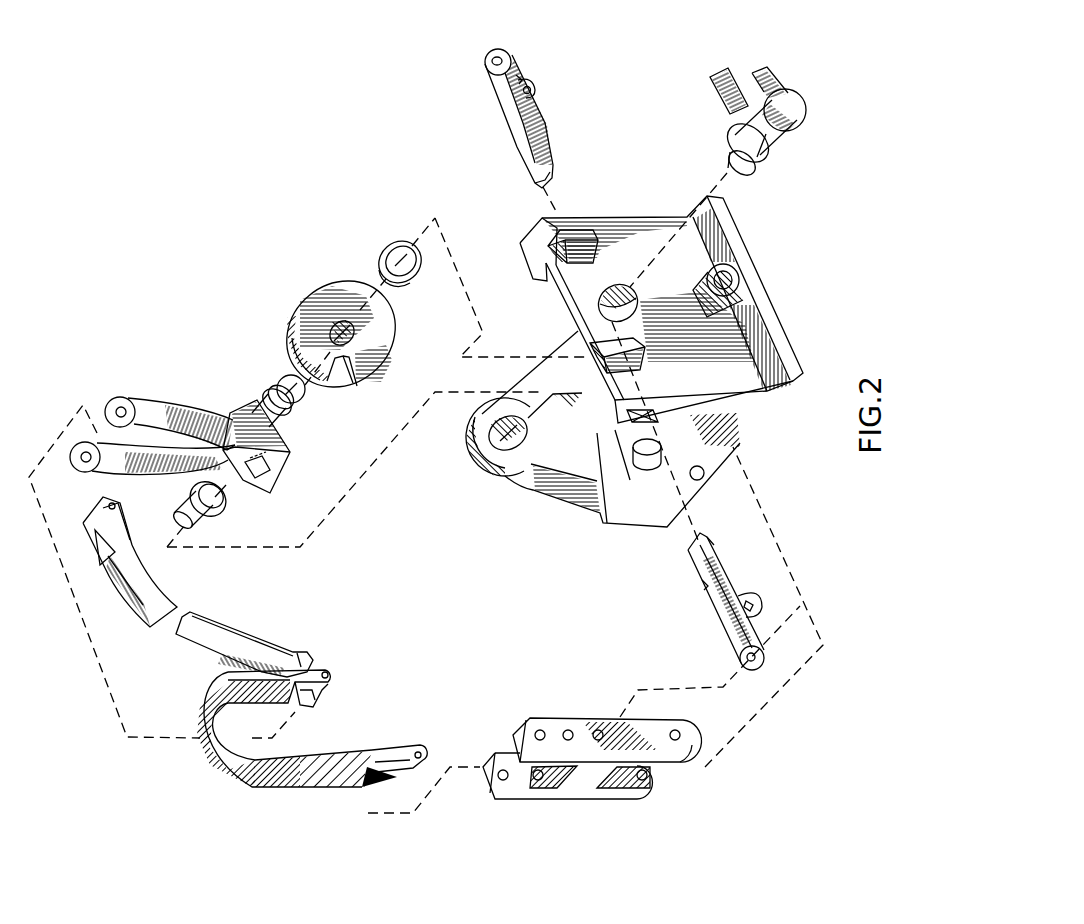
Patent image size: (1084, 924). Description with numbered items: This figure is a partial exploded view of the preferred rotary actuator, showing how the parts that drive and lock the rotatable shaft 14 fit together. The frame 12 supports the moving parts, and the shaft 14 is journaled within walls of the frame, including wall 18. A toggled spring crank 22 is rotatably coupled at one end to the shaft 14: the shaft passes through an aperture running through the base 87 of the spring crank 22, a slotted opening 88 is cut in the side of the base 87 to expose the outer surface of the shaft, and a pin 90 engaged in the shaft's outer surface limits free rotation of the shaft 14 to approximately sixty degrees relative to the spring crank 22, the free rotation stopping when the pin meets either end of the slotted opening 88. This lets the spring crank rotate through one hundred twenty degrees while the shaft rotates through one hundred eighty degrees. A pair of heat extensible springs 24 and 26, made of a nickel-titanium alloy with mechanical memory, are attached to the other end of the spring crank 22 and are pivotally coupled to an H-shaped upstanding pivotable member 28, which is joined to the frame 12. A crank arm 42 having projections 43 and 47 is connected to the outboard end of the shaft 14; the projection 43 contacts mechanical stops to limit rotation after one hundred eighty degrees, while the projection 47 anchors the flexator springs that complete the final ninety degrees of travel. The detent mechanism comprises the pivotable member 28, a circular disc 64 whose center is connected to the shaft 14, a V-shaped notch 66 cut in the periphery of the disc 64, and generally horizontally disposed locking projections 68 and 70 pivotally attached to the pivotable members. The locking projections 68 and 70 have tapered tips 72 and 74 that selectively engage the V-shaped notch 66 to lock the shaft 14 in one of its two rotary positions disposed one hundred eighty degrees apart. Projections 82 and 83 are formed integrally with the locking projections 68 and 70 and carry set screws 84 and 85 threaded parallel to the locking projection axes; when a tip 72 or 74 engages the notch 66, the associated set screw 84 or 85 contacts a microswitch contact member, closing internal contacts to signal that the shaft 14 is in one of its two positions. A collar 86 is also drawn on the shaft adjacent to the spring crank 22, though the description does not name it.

The frame 12 is at (781, 318).
The rotatable shaft 14 is at (181, 510).
The wall 18 is at (522, 493).
The toggled spring crank 22 is at (190, 400).
The heat extensible spring 24 is at (255, 787).
The heat extensible spring 26 is at (224, 622).
The H-shaped upstanding pivotable member 28 is at (562, 718).
The crank arm 42 is at (737, 62).
The projection 43 is at (718, 100).
The projection 47 is at (773, 70).
The circular disc 64 is at (283, 332).
The V-shaped notch 66 is at (345, 388).
The locking projection 68 is at (702, 596).
The locking projection 70 is at (516, 160).
The tapered tip 72 is at (693, 548).
The tapered tip 74 is at (558, 174).
The projection 82 is at (762, 606).
The projection 83 is at (535, 82).
The set screw 84 is at (745, 595).
The set screw 85 is at (533, 96).
The collar 86 is at (230, 495).
The base 87 is at (300, 442).
The slotted opening 88 is at (250, 472).
The pin 90 is at (283, 481).